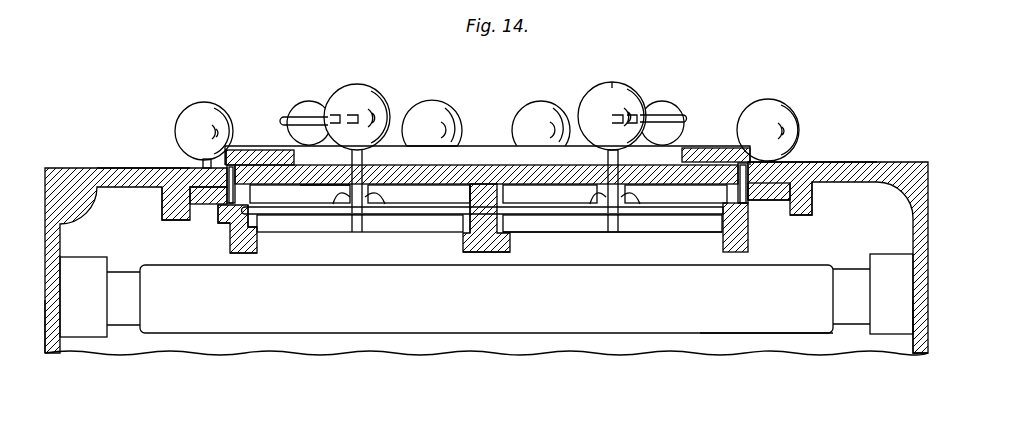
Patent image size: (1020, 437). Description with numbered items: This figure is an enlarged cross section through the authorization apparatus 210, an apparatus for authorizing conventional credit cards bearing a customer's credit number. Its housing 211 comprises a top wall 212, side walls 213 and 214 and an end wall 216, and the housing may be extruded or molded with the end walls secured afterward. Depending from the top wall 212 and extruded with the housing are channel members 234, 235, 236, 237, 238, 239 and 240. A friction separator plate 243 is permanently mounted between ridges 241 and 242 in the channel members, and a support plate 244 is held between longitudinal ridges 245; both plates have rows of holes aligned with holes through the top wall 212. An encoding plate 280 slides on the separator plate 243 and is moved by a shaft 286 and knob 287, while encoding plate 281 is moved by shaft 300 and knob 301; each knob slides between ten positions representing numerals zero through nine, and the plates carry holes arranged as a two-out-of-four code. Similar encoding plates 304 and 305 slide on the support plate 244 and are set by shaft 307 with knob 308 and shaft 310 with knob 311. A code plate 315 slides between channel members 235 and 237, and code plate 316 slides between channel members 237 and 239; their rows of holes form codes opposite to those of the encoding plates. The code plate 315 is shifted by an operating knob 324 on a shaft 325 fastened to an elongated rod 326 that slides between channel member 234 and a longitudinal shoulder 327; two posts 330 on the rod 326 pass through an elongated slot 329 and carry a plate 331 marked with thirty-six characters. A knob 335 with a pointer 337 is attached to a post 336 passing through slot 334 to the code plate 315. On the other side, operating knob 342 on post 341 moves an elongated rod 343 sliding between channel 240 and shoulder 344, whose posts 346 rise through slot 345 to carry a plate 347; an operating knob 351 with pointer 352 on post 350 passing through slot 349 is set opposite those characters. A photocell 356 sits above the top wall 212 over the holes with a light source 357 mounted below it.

The authorization apparatus 210 is at (178, 362).
The housing 211 is at (80, 167).
The top wall 212 is at (140, 172).
The side wall 213 is at (57, 354).
The side wall 214 is at (923, 355).
The end wall 216 is at (752, 345).
The channel member 234 is at (162, 207).
The channel member 235 is at (245, 254).
The channel member 236 is at (383, 205).
The channel member 237 is at (488, 250).
The channel member 238 is at (633, 205).
The channel member 239 is at (733, 252).
The channel member 240 is at (813, 216).
The ridge 241 is at (258, 216).
The ridge 242 is at (492, 198).
The friction separator plate 243 is at (440, 208).
The support plate 244 is at (573, 207).
The longitudinal ridge 245 is at (487, 200).
The encoding plate 280 is at (282, 200).
The encoding plate 281 is at (415, 200).
The shaft 286 is at (322, 198).
The knob 287 is at (313, 102).
The shaft 300 is at (437, 163).
The knob 301 is at (432, 110).
The encoding plate 304 is at (557, 197).
The encoding plate 305 is at (705, 198).
The shaft 307 is at (535, 183).
The knob 308 is at (542, 115).
The shaft 310 is at (657, 116).
The knob 311 is at (655, 98).
The code plate 315 is at (258, 238).
The code plate 316 is at (678, 222).
The operating knob 324 is at (207, 162).
The shaft 325 is at (200, 128).
The elongated rod 326 is at (190, 196).
The longitudinal shoulder 327 is at (222, 225).
The elongated slot 329 is at (225, 180).
The post 330 is at (249, 164).
The plate 331 is at (277, 148).
The elongated slot 334 is at (340, 176).
The knob 335 is at (362, 90).
The post 336 is at (348, 232).
The pointer 337 is at (320, 118).
The post 341 is at (780, 162).
The operating knob 342 is at (769, 127).
The elongated rod 343 is at (812, 196).
The elongated shoulder 344 is at (743, 192).
The elongated slot 345 is at (718, 184).
The post 346 is at (776, 201).
The plate 347 is at (698, 148).
The slot 349 is at (600, 163).
The post 350 is at (606, 200).
The operating knob 351 is at (617, 90).
The pointer 352 is at (652, 162).
The photocell 356 is at (467, 150).
The light source 357 is at (817, 322).